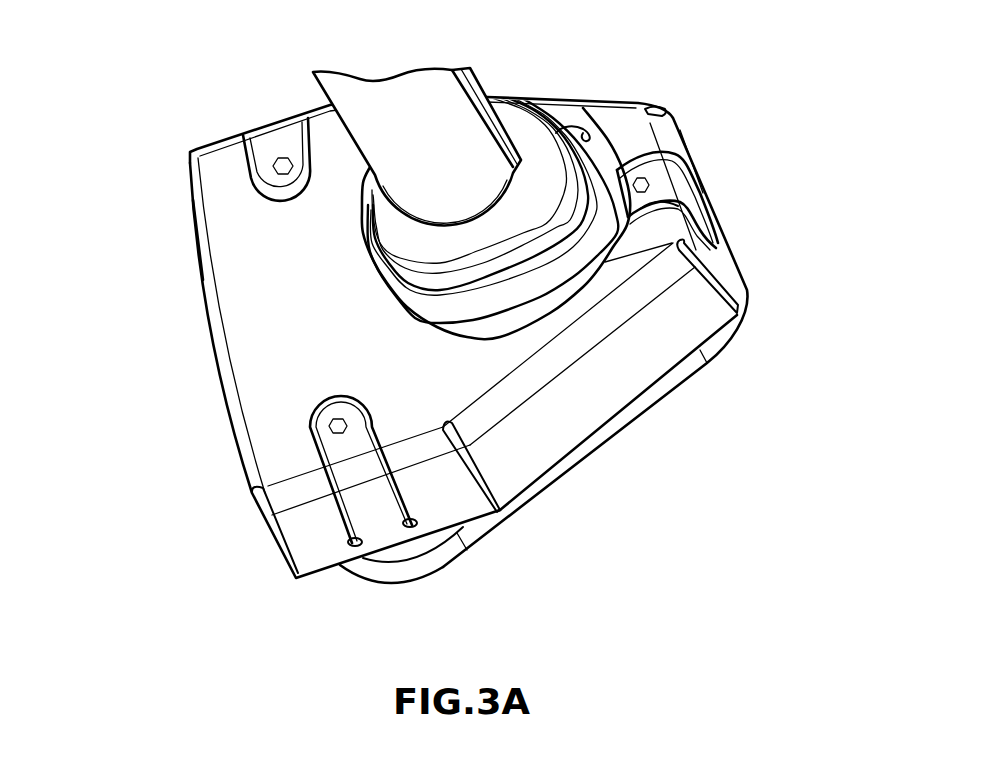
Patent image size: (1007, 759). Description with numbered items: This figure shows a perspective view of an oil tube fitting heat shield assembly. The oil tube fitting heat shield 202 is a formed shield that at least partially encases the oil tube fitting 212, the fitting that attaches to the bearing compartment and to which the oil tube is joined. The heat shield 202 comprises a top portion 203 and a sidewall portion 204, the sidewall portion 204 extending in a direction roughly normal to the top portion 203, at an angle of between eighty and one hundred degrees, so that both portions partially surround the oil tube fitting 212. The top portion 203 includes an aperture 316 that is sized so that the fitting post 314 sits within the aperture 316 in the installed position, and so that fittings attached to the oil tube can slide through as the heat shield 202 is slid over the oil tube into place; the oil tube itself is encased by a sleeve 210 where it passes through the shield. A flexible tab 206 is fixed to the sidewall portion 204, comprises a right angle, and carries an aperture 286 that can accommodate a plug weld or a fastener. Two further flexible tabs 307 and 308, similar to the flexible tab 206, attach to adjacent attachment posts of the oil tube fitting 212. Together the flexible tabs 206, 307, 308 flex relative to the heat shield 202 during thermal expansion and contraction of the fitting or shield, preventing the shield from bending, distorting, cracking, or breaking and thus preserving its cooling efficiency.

The oil tube fitting heat shield 202 is at (213, 177).
The top portion 203 is at (220, 233).
The sidewall portion 204 is at (731, 250).
The flexible tab 206 is at (507, 185).
The sleeve 210 is at (400, 90).
The oil tube fitting 212 is at (430, 563).
The aperture 286 is at (633, 190).
The flexible tab 307 is at (270, 142).
The flexible tab 308 is at (335, 453).
The fitting post 314 is at (520, 125).
The aperture 316 is at (591, 138).